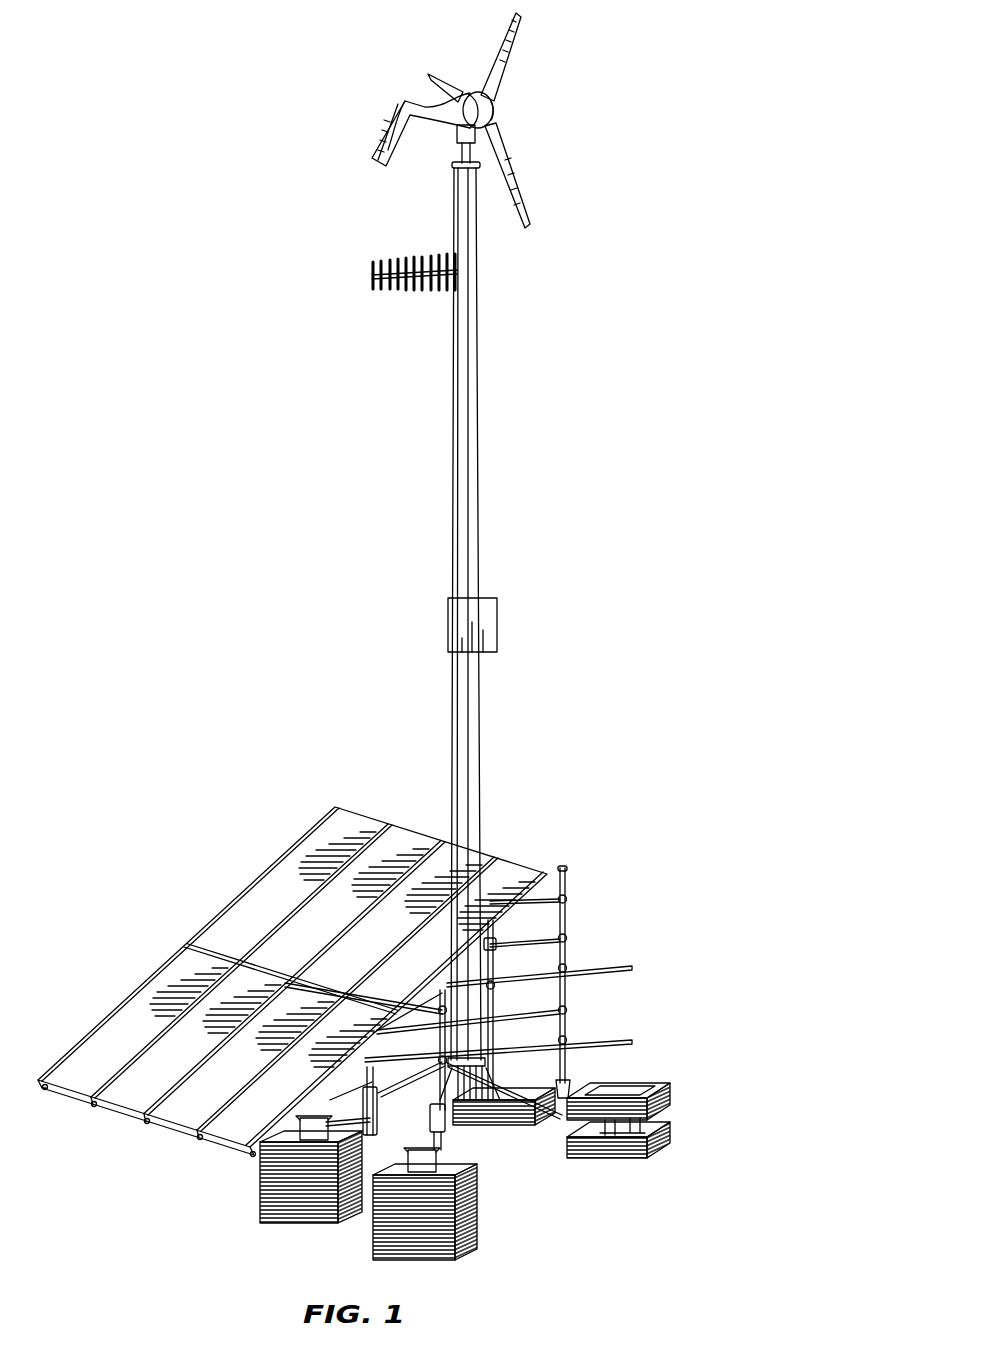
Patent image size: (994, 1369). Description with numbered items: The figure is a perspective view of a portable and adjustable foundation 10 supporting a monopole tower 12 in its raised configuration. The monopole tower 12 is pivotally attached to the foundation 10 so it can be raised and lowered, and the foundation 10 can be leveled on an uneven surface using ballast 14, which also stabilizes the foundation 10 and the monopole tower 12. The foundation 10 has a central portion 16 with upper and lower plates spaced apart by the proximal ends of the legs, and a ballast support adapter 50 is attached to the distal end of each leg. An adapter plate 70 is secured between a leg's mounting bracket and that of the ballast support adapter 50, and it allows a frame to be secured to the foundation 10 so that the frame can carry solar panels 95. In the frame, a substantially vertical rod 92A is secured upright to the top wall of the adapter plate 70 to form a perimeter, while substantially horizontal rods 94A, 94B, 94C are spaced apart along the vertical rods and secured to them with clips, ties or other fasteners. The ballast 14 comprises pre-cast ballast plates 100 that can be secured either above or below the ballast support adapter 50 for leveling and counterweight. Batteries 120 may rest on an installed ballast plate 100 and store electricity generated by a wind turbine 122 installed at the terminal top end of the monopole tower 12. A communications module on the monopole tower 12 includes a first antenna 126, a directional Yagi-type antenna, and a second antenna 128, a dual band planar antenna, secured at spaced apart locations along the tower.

The foundation 10 is at (557, 1211).
The monopole tower 12 is at (480, 480).
The ballast 14 is at (651, 1090).
The central portion 16 is at (515, 1127).
The ballast support adapter 50 is at (650, 1131).
The adapter plate 70 is at (372, 1108).
The vertical rod 92A is at (567, 869).
The horizontal rod 94A is at (567, 898).
The horizontal rod 94B is at (600, 966).
The horizontal rod 94C is at (600, 1040).
The solar panels 95 is at (183, 932).
The ballast plates 100 is at (258, 1185).
The batteries 120 is at (567, 938).
The wind turbine 122 is at (356, 58).
The first antenna 126 is at (371, 274).
The second antenna 128 is at (497, 620).